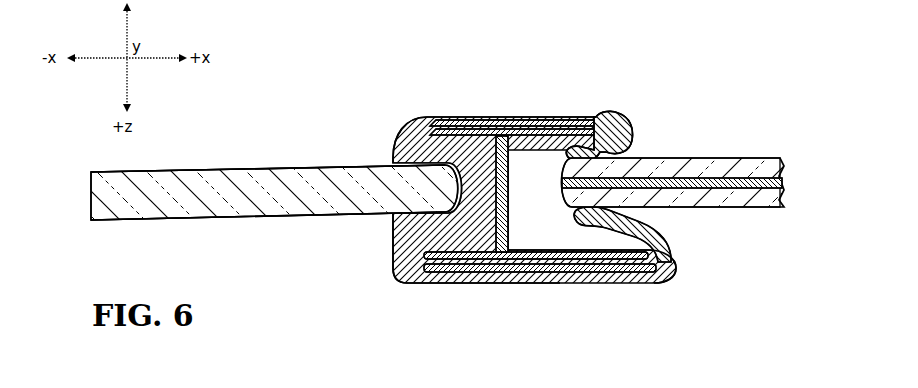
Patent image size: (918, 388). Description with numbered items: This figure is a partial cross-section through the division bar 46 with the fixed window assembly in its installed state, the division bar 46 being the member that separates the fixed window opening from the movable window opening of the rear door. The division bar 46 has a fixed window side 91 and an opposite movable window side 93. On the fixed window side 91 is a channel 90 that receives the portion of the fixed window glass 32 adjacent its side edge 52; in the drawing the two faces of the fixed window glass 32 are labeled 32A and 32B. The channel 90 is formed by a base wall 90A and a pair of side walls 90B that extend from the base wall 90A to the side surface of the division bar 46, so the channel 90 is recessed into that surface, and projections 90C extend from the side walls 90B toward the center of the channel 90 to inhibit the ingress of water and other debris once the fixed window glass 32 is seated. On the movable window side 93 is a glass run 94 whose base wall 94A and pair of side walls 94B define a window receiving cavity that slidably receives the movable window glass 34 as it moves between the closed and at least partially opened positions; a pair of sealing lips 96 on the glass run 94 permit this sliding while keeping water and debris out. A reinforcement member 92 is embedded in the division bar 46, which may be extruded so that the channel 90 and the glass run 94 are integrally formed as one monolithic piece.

The fixed window glass 32 is at (158, 178).
The first panel lower surface 32A is at (230, 221).
The first panel upper surface 32B is at (217, 172).
The movable window glass 34 is at (743, 163).
The division bar 46 is at (551, 93).
The side edge 52 is at (457, 117).
The channel 90 is at (400, 276).
The base wall 90A is at (468, 284).
The side walls 90B is at (397, 120).
The projections 90C is at (389, 161).
The fixed window side 91 is at (388, 277).
The reinforcement member 92 is at (567, 284).
The movable window side 93 is at (681, 272).
The glass run 94 is at (569, 201).
The base wall 94A is at (552, 119).
The side walls 94B is at (571, 119).
The sealing lips 96 is at (613, 130).